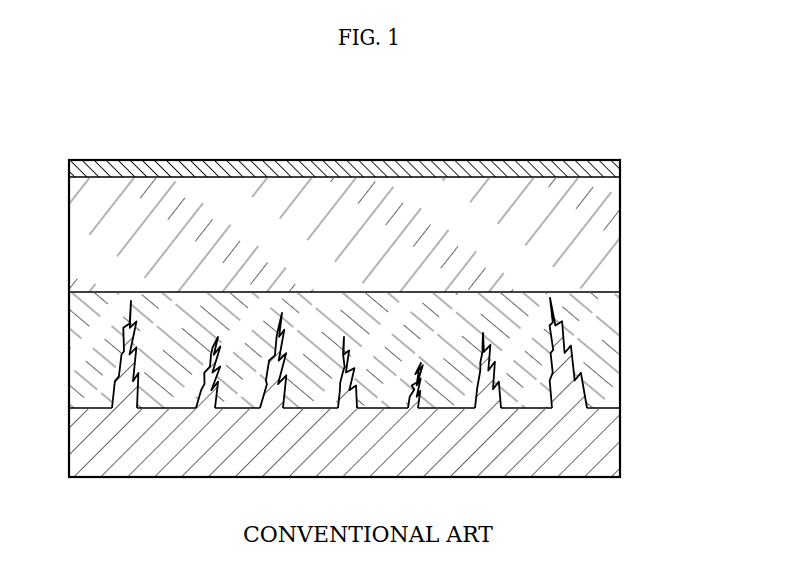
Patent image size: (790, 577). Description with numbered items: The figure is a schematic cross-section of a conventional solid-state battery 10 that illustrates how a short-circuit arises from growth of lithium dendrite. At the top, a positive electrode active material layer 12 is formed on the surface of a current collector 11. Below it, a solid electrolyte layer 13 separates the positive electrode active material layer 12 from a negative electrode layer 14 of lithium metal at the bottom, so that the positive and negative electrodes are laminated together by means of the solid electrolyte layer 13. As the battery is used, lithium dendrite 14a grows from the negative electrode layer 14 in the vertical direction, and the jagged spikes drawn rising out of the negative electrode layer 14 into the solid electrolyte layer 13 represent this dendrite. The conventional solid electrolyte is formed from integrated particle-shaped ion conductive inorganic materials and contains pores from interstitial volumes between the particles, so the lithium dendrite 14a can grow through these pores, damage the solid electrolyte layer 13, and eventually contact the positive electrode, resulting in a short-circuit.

The solid-state battery 10 is at (147, 109).
The current collector 11 is at (621, 167).
The positive electrode active material layer 12 is at (621, 237).
The solid electrolyte layer 13 is at (621, 323).
The negative electrode layer 14 is at (621, 445).
The lithium dendrite 14a is at (566, 361).